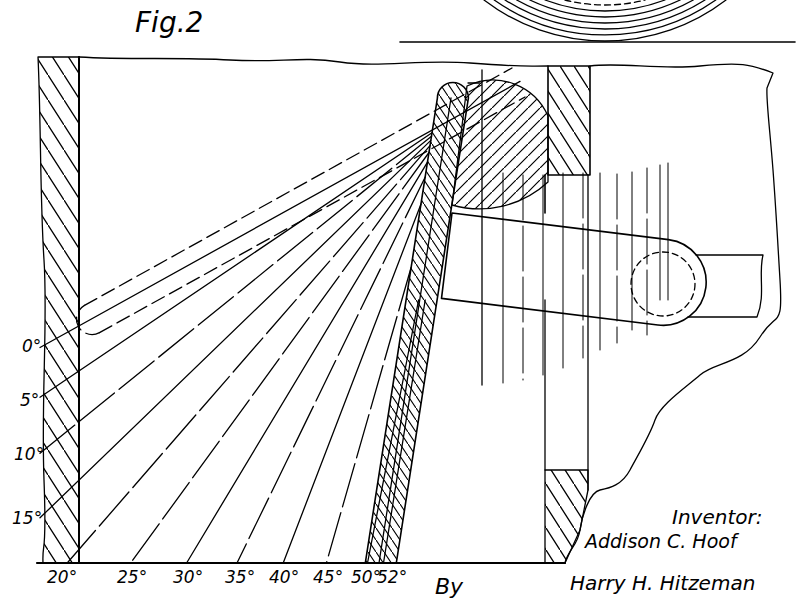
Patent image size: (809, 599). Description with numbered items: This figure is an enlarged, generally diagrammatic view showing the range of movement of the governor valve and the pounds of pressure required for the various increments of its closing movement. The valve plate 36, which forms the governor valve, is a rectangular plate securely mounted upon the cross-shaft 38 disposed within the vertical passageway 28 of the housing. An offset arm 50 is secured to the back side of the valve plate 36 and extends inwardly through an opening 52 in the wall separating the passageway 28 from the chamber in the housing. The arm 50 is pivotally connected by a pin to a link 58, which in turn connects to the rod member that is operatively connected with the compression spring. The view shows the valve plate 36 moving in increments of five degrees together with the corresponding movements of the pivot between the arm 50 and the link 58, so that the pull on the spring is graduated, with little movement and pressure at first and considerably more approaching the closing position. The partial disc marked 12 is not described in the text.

The disc of FIG. 1 12 is at (705, 0).
The vertical passageway 28 is at (79, 157).
The valve plate 36 is at (437, 100).
The cross-shaft 38 is at (548, 116).
The arm 50 is at (640, 332).
The opening 52 is at (555, 425).
The link 58 is at (738, 255).